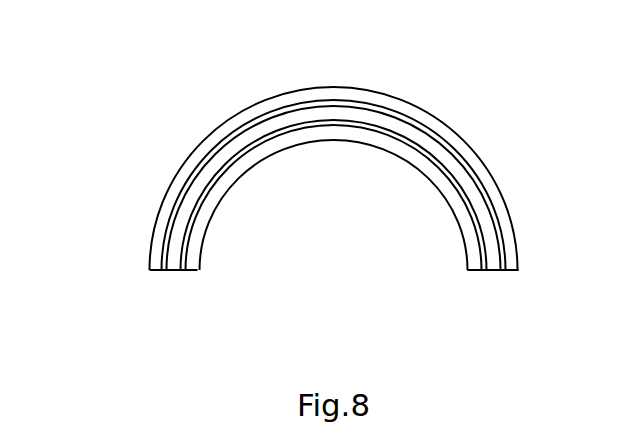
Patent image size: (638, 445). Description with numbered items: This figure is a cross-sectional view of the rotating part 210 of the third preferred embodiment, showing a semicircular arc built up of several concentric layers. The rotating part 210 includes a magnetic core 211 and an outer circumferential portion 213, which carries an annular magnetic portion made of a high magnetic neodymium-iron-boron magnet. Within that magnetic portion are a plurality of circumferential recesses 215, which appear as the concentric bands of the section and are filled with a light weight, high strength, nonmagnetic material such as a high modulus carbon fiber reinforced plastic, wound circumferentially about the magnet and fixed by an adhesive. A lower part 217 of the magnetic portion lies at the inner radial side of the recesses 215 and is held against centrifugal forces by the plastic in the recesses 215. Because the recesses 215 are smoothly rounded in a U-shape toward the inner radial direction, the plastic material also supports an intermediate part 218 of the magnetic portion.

The rotating part 210 is at (455, 110).
The magnetic core 211 is at (252, 248).
The outer circumferential portion 213 is at (495, 277).
The circumferential recesses 215 is at (491, 185).
The lower part 217 is at (500, 237).
The intermediate part 218 is at (348, 141).